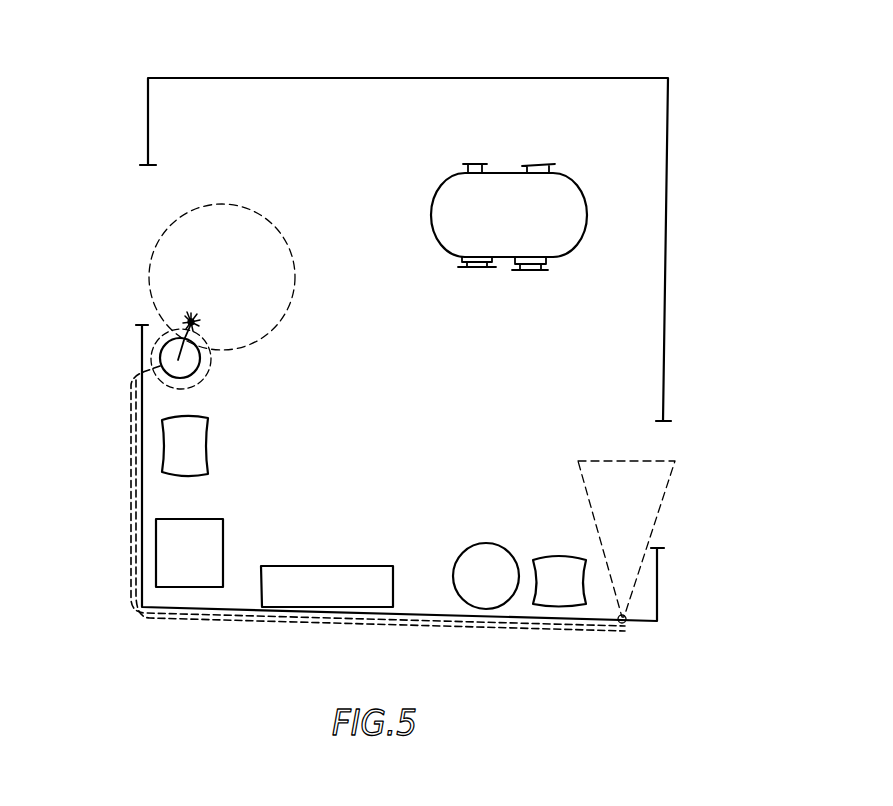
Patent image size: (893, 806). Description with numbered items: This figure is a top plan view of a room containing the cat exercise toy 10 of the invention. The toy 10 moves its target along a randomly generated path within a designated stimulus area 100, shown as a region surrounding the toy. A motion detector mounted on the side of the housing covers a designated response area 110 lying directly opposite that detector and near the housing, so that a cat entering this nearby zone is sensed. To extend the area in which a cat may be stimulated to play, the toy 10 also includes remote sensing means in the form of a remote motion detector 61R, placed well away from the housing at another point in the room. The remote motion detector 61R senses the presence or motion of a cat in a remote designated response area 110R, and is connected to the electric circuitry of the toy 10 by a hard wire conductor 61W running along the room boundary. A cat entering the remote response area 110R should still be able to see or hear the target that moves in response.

The designated stimulus area 100 is at (160, 327).
The cat exercise toy 10 is at (167, 338).
The designated response area 110 is at (214, 203).
The hard wire conductor 61W is at (128, 532).
The remote motion detector 61R is at (628, 617).
The remote designated response area 110R is at (662, 497).